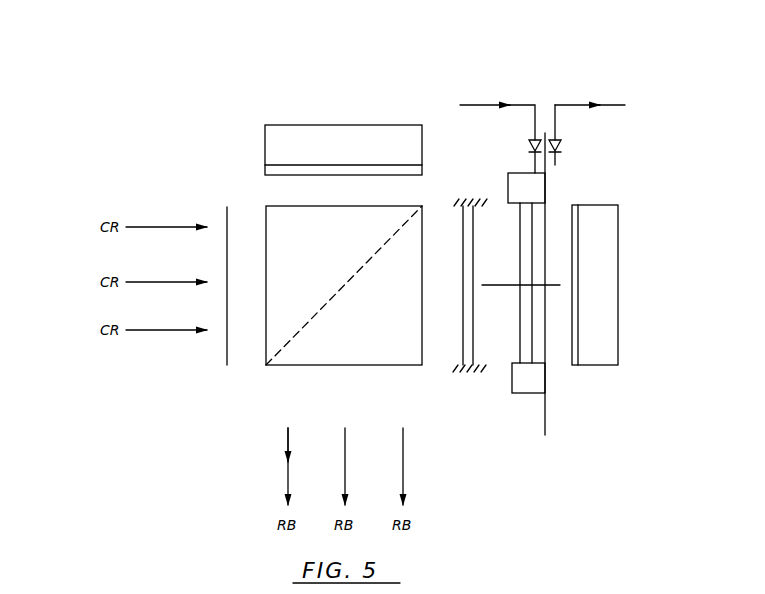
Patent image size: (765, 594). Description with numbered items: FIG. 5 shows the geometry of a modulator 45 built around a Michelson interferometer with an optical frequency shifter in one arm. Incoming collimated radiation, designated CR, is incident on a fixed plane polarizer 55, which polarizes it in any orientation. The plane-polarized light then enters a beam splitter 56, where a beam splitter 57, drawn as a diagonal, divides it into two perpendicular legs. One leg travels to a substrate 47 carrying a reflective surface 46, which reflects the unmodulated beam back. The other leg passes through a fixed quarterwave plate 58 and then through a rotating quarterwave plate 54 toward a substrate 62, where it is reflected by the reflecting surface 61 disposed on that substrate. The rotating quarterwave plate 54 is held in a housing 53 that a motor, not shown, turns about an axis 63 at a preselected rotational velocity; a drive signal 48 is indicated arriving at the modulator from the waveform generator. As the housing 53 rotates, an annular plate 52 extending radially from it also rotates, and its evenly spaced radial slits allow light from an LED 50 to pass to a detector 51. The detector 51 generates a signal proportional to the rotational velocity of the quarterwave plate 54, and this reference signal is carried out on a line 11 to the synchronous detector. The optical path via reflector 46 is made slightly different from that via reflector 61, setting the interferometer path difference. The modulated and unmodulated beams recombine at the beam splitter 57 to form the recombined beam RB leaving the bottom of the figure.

The color separation apparatus 45 is at (212, 113).
The reflective surface 46 is at (262, 171).
The substrate 47 is at (314, 123).
The input signal line 48 is at (477, 103).
The line 11 is at (582, 103).
The LED 50 is at (523, 145).
The detector 51 is at (560, 147).
The annular plate 52 is at (549, 172).
The housing 53 is at (548, 193).
The rotating quarterwave plate 54 is at (534, 218).
The fixed plane polarizer 55 is at (225, 357).
The beam splitter 56 is at (265, 346).
The beam splitter 57 is at (304, 328).
The fixed quarterwave plate 58 is at (460, 347).
The reflecting surface 61 is at (577, 372).
The substrate 62 is at (615, 372).
The axis 63 is at (496, 281).